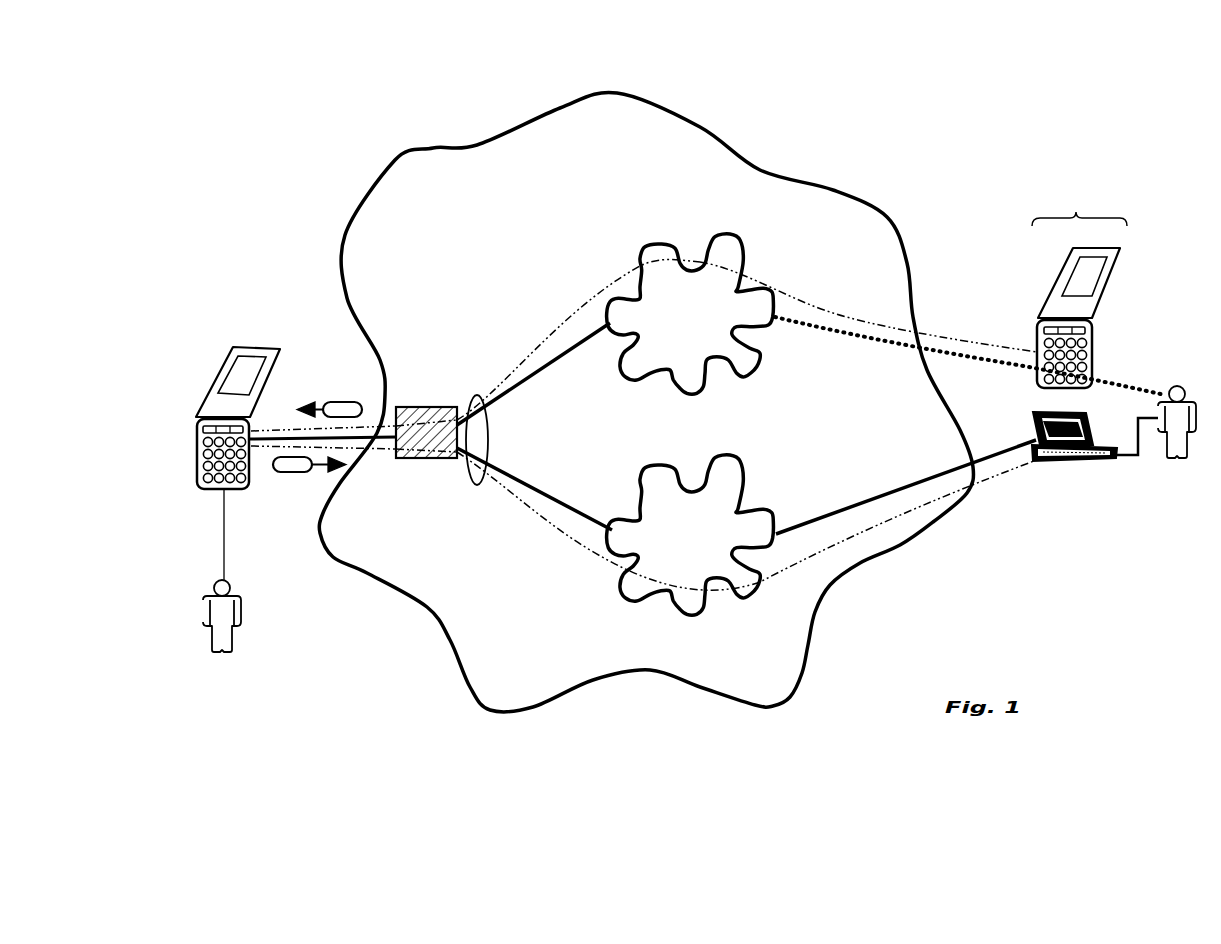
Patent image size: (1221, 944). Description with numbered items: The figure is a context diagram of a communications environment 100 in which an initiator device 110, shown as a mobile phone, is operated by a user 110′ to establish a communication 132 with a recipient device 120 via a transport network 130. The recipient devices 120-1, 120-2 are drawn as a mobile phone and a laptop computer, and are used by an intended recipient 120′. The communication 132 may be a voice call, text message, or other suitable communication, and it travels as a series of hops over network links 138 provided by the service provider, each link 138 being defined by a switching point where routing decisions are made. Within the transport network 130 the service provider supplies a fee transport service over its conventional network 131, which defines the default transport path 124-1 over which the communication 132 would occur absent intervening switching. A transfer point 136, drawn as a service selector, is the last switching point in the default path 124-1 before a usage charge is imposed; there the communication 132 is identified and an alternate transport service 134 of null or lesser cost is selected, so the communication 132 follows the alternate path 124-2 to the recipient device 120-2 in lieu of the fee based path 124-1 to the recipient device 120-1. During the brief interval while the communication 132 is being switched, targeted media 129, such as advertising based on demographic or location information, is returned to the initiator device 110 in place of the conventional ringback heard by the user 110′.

The communications environment 100 is at (347, 99).
The initiator device 110 is at (236, 347).
The user 110′ is at (243, 607).
The recipient device 120 is at (1076, 216).
The recipient device 120-1 is at (1037, 348).
The recipient device 120-2 is at (1075, 463).
The recipient 120′ is at (1163, 448).
The transport path 124-1 is at (945, 336).
The alternate path 124-2 is at (530, 515).
The targeted media 129 is at (349, 402).
The transport network 130 is at (640, 93).
The network 131 is at (642, 266).
The communication 132 is at (288, 474).
The alternate transport service 134 is at (627, 580).
The transfer point 136 is at (426, 459).
The network links 138 is at (489, 438).